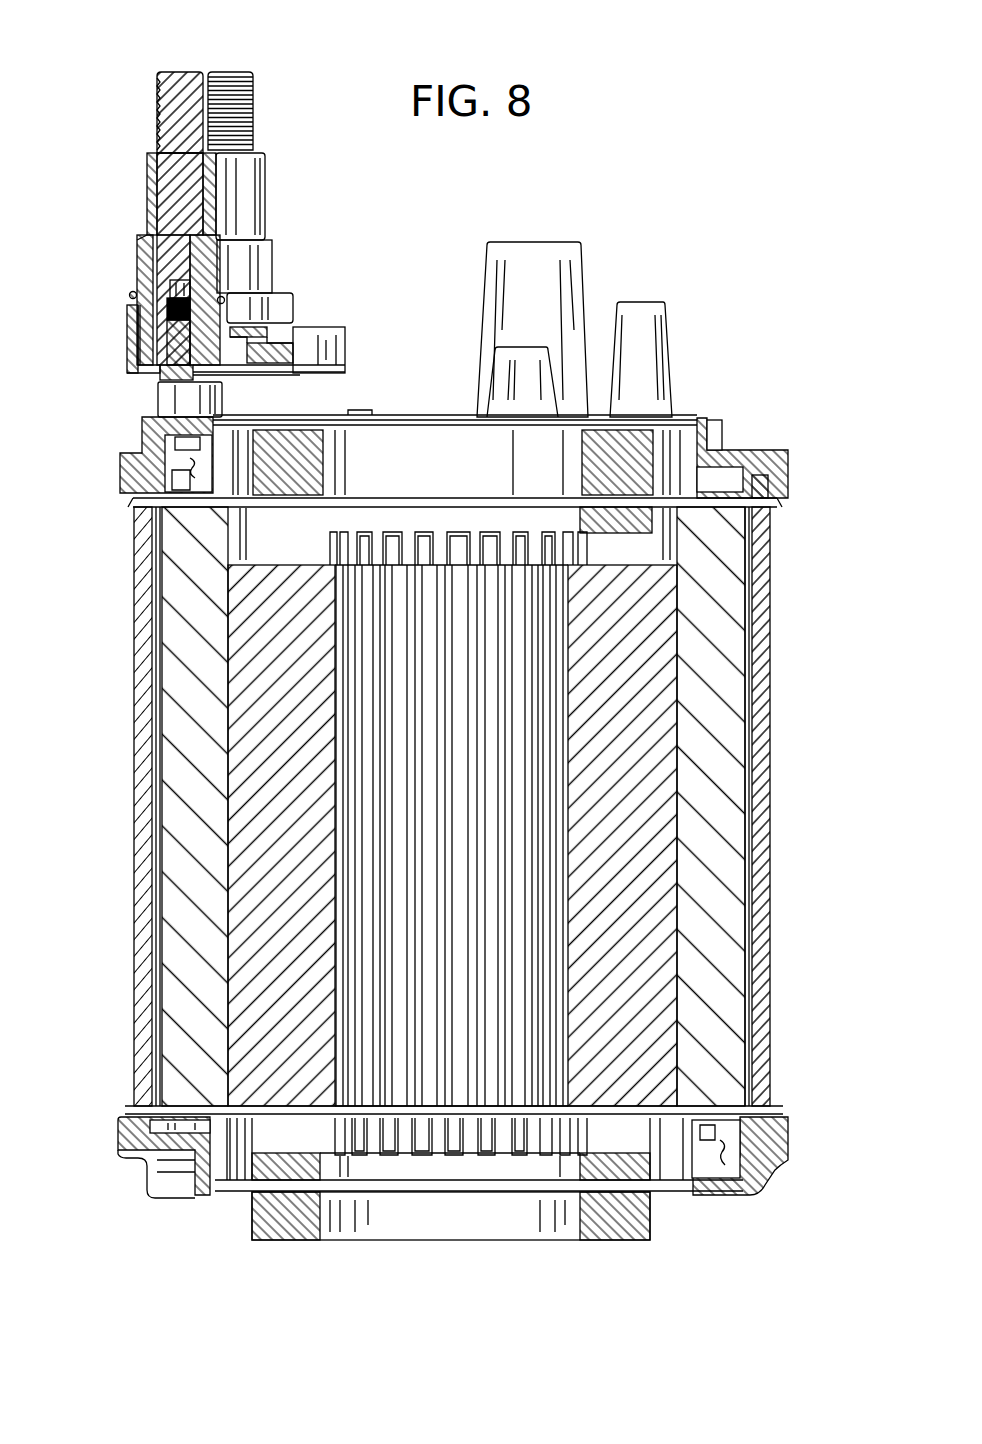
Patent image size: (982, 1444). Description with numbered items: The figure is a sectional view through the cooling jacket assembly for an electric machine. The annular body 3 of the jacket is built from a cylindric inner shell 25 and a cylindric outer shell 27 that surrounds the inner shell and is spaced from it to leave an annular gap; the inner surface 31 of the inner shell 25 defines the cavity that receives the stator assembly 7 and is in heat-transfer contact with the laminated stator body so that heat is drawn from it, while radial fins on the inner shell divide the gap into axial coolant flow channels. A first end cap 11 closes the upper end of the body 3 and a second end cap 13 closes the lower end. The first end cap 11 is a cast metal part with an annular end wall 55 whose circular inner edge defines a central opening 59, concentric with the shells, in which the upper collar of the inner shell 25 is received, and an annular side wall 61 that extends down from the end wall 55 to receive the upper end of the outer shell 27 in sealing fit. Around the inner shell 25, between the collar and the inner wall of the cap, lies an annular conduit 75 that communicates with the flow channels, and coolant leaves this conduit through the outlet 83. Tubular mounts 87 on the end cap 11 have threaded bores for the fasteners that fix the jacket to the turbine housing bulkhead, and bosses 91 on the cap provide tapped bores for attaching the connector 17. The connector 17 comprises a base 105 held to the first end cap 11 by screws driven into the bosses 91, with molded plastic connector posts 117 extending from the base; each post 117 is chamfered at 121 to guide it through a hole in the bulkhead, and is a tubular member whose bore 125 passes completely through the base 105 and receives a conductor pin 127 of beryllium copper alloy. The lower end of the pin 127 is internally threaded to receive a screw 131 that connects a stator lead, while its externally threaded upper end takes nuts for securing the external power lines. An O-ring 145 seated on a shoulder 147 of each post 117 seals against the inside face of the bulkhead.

The annular body 3 is at (487, 831).
The stator assembly 7 is at (287, 1245).
The first end cap 11 is at (448, 731).
The second end cap 13 is at (417, 1186).
The connector 17 is at (199, 215).
The inner shell 25 is at (715, 910).
The outer shell 27 is at (772, 800).
The inner surface 31 is at (207, 1188).
The end wall 55 is at (160, 405).
The central opening 59 is at (667, 445).
The side wall 61 is at (120, 478).
The annular conduit 75 is at (155, 462).
The outlet 83 is at (540, 245).
The tubular mounts 87 is at (667, 332).
The bosses 91 is at (160, 395).
The base 105 is at (130, 320).
The connector posts 117 is at (150, 175).
The chamfer 121 is at (270, 240).
The bore 125 is at (160, 150).
The conductor pin 127 is at (180, 186).
The screw 131 is at (180, 342).
The O-ring 145 is at (133, 291).
The shoulder 147 is at (130, 305).